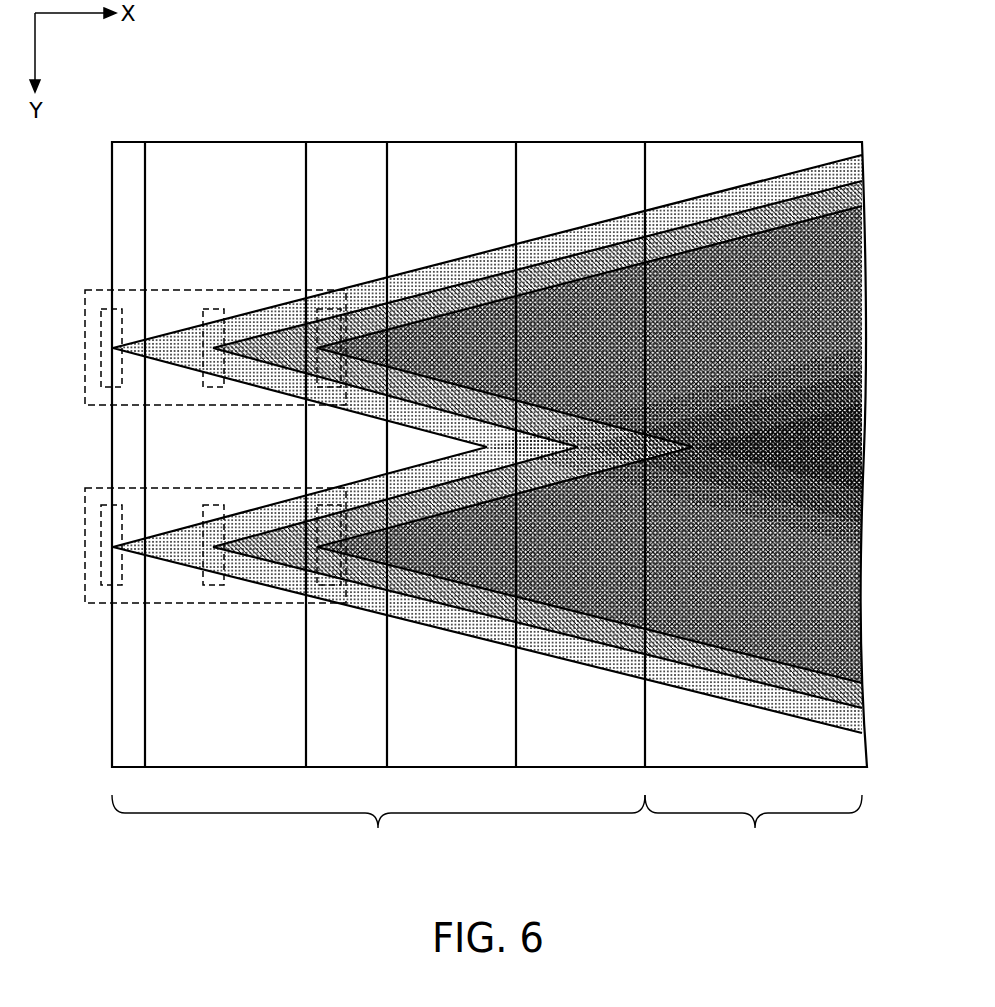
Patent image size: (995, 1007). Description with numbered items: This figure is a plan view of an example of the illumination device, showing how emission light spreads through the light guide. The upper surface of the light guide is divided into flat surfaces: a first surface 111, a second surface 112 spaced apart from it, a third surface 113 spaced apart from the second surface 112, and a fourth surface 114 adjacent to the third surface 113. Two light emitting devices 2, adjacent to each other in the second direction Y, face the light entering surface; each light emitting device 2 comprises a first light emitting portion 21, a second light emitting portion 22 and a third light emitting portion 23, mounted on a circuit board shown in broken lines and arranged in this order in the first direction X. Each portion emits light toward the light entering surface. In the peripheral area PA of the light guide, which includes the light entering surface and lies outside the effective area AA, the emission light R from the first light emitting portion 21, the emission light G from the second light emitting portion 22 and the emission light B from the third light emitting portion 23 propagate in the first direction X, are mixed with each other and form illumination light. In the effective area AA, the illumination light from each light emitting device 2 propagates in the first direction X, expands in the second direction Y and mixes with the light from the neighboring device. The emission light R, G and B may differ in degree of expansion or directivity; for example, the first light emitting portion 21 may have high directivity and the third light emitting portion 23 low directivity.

The light emitting device 2 is at (85, 349).
The first light emitting portion 21 is at (105, 388).
The second light emitting portion 22 is at (210, 388).
The third light emitting portion 23 is at (319, 388).
The first surface 111 is at (129, 153).
The second surface 112 is at (344, 153).
The third surface 113 is at (579, 153).
The fourth surface 114 is at (739, 153).
The emission light R is at (428, 277).
The emission light G is at (479, 290).
The emission light B is at (578, 295).
The peripheral area PA is at (378, 828).
The effective area AA is at (753, 828).